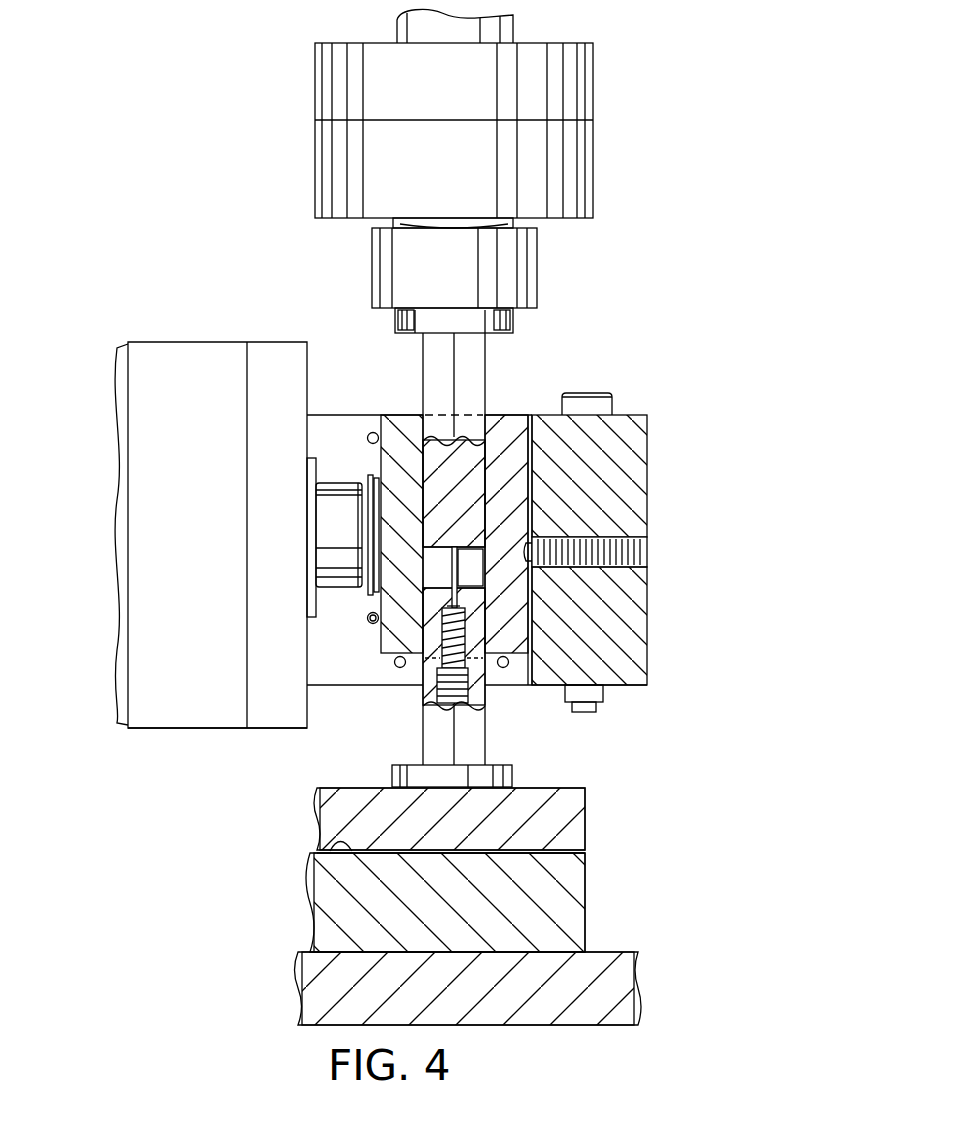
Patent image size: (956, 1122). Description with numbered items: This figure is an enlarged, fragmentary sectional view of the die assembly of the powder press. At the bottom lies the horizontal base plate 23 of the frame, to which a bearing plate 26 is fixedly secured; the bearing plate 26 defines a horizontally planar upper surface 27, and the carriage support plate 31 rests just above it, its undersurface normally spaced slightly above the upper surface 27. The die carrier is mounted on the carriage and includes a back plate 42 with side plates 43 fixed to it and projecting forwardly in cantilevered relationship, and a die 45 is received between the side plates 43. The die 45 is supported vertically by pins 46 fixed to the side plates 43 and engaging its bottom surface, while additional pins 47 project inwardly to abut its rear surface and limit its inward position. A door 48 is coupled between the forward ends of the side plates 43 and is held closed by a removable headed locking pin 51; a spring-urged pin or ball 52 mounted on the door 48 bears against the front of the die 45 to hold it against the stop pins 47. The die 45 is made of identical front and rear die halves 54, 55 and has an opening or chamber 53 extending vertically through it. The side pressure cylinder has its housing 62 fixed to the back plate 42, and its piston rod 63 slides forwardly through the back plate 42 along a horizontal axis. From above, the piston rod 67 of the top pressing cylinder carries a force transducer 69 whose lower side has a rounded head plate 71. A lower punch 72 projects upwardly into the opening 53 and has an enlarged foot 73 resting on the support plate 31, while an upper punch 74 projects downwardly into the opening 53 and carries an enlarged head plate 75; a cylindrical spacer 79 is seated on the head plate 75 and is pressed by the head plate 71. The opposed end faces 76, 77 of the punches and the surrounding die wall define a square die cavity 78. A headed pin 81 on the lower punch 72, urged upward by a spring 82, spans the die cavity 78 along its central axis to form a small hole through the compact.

The base plate 23 is at (620, 983).
The bearing plate 26 is at (570, 895).
The upper surface 27 is at (330, 846).
The support plate 31 is at (573, 820).
The back plate 42 is at (282, 717).
The side plates 43 is at (315, 672).
The die 45 is at (532, 478).
The pins 46 is at (401, 668).
The pins 47 is at (366, 430).
The door 48 is at (632, 620).
The locking pin 51 is at (590, 408).
The spring-urged pin or ball 52 is at (532, 550).
The opening or chamber 53 is at (428, 425).
The front die half 54 is at (508, 430).
The rear die half 55 is at (400, 425).
The housing 62 is at (157, 595).
The piston rod 63 is at (332, 535).
The piston rod 67 is at (500, 32).
The force transducer 69 is at (577, 163).
The head plate 71 is at (453, 222).
The lower punch 72 is at (465, 733).
The foot 73 is at (503, 777).
The upper punch 74 is at (475, 380).
The head plate 75 is at (483, 320).
The end face 76 is at (440, 550).
The end face 77 is at (367, 617).
The die cavity 78 is at (472, 570).
The cylindrical spacer 79 is at (518, 283).
The headed pin 81 is at (453, 593).
The spring 82 is at (465, 637).